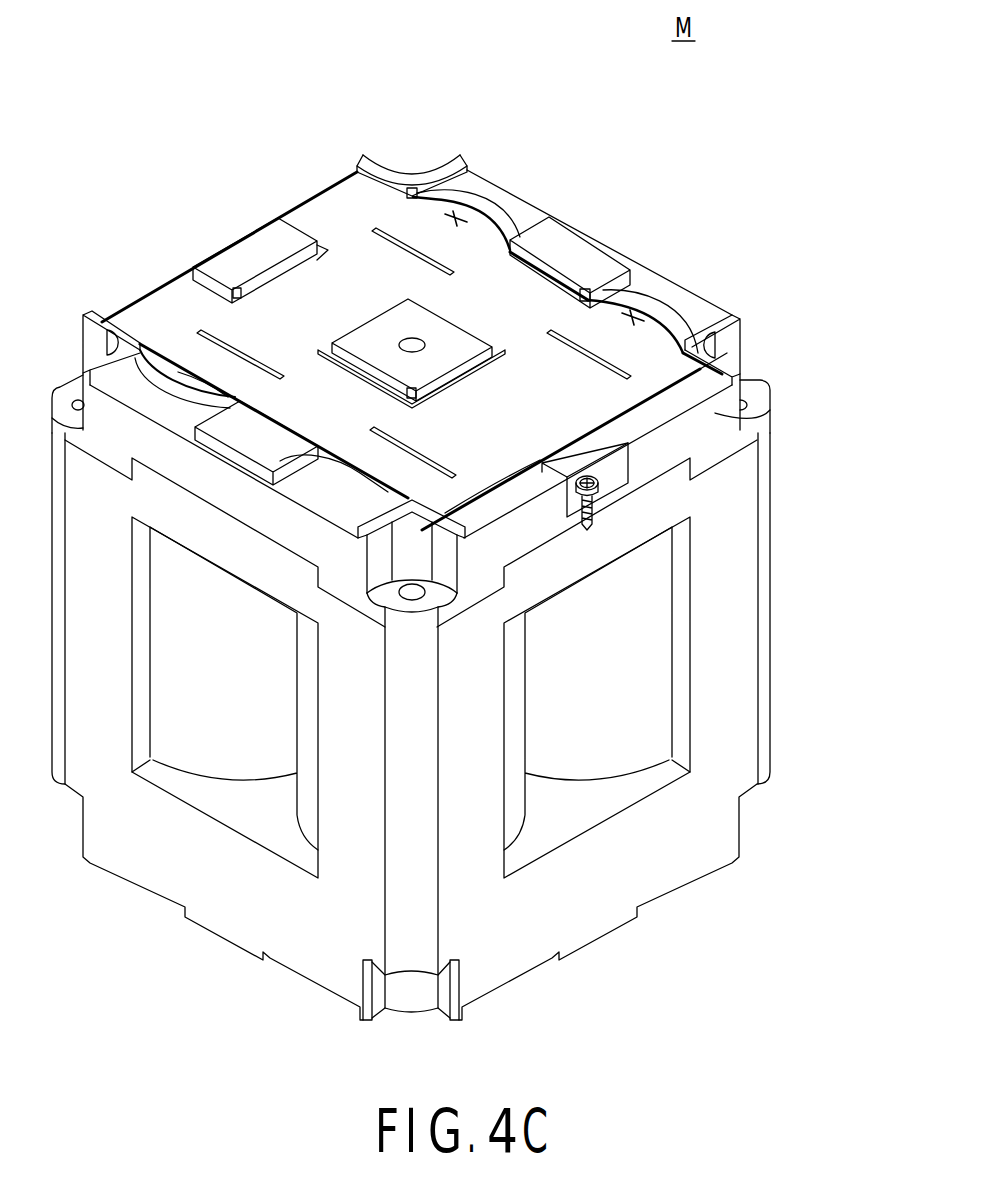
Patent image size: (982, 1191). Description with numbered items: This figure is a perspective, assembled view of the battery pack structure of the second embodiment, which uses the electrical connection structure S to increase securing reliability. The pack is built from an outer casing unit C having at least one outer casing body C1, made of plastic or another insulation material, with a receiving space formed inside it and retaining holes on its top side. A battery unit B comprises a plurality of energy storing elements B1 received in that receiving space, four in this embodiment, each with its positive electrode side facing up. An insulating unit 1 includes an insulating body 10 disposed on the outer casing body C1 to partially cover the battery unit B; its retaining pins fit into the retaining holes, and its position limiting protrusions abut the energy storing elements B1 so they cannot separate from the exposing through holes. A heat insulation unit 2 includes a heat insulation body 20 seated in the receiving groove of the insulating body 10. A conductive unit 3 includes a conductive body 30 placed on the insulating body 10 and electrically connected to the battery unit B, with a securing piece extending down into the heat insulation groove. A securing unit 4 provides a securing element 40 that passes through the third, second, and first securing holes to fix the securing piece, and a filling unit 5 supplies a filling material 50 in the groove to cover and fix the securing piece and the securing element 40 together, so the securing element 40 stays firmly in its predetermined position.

The electrical connection structure S is at (163, 291).
The conductive unit 3 is at (527, 121).
The conductive body 30 is at (492, 297).
The filling unit 5 is at (541, 362).
The filling material 50 is at (568, 462).
The securing unit 4 is at (608, 630).
The securing element 40 is at (592, 525).
The insulating unit 1 is at (465, 383).
The insulating body 10 is at (712, 408).
The heat insulation unit 2 is at (694, 474).
The heat insulation body 20 is at (622, 465).
The battery unit B is at (462, 631).
The energy storing element B1 is at (636, 613).
The outer casing unit C is at (470, 697).
The outer casing body C1 is at (730, 675).